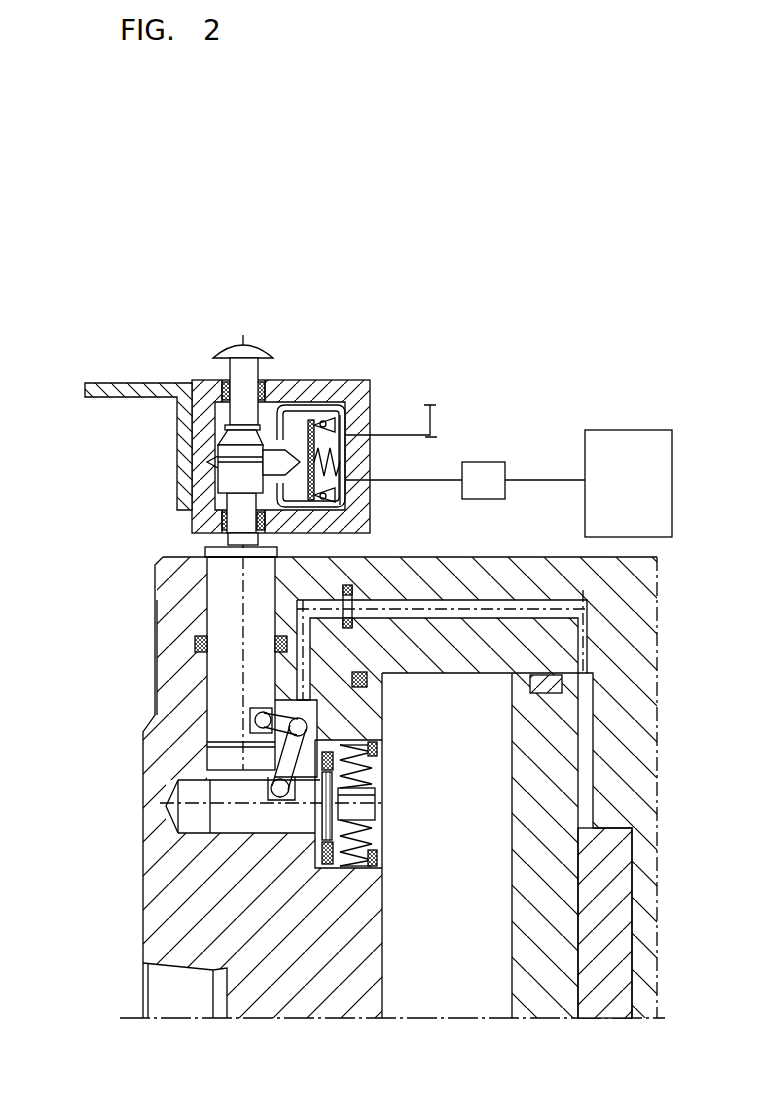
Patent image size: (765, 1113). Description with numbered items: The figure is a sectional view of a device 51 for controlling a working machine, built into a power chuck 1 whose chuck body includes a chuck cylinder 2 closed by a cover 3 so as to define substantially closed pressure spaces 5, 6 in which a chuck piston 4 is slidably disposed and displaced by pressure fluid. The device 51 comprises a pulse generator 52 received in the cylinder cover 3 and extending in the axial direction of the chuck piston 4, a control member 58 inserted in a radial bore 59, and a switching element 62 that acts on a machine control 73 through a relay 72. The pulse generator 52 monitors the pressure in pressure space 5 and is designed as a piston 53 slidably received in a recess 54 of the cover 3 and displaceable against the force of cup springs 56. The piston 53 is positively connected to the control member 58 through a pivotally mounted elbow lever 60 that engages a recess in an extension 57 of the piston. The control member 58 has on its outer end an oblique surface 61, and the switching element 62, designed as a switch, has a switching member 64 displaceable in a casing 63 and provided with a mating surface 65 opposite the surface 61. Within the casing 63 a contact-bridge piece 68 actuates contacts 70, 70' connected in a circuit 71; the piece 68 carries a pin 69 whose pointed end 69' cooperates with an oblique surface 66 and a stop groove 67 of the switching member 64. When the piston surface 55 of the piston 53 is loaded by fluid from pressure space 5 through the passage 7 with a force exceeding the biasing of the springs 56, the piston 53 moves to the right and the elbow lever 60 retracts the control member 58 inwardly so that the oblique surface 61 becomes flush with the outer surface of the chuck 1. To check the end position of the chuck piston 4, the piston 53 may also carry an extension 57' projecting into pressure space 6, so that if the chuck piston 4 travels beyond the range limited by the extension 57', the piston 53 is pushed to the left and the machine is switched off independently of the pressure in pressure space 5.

The power chuck 1 is at (535, 556).
The chuck cylinder 2 is at (496, 567).
The cover 3 is at (160, 772).
The chuck piston 4 is at (540, 982).
The pressure space 5 is at (588, 737).
The pressure space 6 is at (440, 990).
The pressure fluid passage 7 is at (583, 640).
The device for controlling a working machine 51 is at (116, 685).
The pulse generator 52 is at (388, 886).
The piston 53 is at (345, 790).
The recess 54 is at (355, 838).
The piston surface 55 is at (350, 762).
The cup springs 56 is at (375, 855).
The extension 57 is at (193, 807).
The extension 57' is at (324, 804).
The control member 58 is at (213, 610).
The radial bore 59 is at (213, 692).
The elbow lever 60 is at (318, 742).
The oblique surface 61 is at (212, 558).
The switching element 62 is at (303, 378).
The casing 63 is at (325, 388).
The switching member 64 is at (232, 398).
The mating surface 65 is at (227, 540).
The oblique surface 66 is at (225, 448).
The stop groove 67 is at (220, 462).
The contact-bridge piece 68 is at (322, 437).
The pin 69 is at (281, 380).
The pointed end 69' is at (243, 417).
The contact 70 is at (341, 418).
The contact 70' is at (379, 478).
The circuit 71 is at (437, 417).
The relay 72 is at (487, 463).
The machine control 73 is at (613, 431).